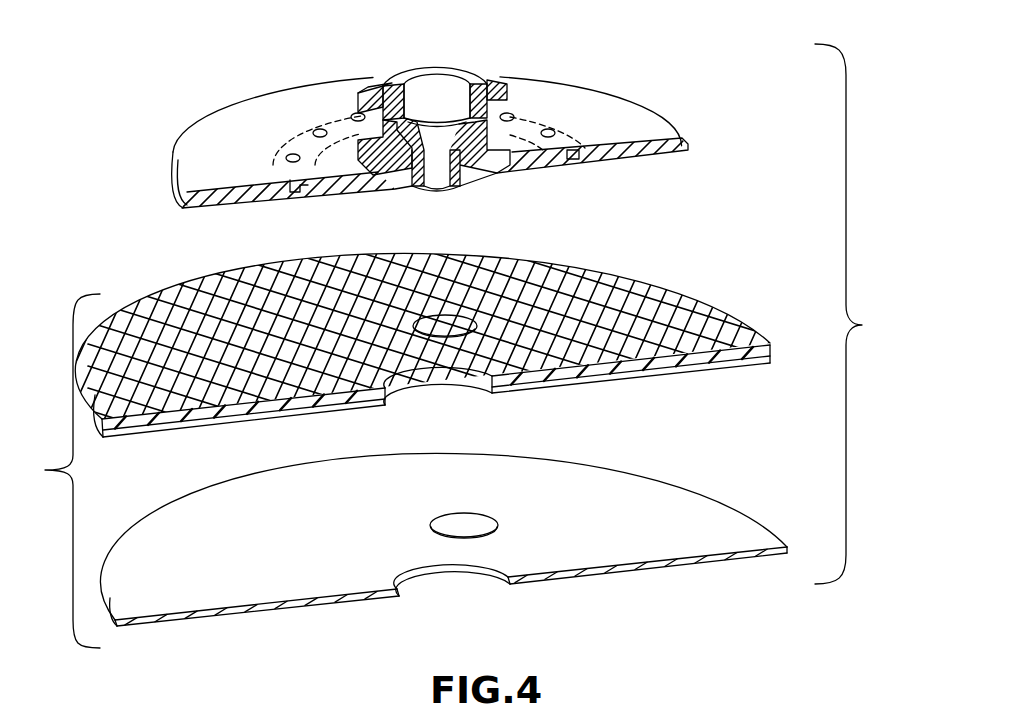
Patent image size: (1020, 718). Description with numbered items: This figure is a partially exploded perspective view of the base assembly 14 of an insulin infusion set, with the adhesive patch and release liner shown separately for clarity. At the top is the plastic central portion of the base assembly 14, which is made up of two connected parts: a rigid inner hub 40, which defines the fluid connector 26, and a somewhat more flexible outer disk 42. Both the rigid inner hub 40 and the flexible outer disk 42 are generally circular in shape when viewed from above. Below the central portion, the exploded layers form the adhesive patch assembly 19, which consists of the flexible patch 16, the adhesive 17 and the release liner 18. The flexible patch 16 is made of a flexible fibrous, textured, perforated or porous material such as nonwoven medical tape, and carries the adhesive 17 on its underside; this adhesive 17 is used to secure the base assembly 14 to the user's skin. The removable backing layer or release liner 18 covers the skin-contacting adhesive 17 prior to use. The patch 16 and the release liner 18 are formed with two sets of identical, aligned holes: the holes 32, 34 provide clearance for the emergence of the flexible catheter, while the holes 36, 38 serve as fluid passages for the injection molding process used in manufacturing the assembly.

The base assembly 14 is at (870, 314).
The flexible patch 16 is at (439, 331).
The adhesive 17 is at (192, 432).
The release liner 18 is at (443, 522).
The adhesive patch assembly 19 is at (51, 471).
The fluid connector 26 is at (373, 84).
The hole 32 is at (441, 383).
The hole 34 is at (399, 573).
The hole 36 is at (448, 330).
The hole 38 is at (488, 510).
The rigid inner hub 40 is at (498, 83).
The flexible outer disk 42 is at (578, 106).